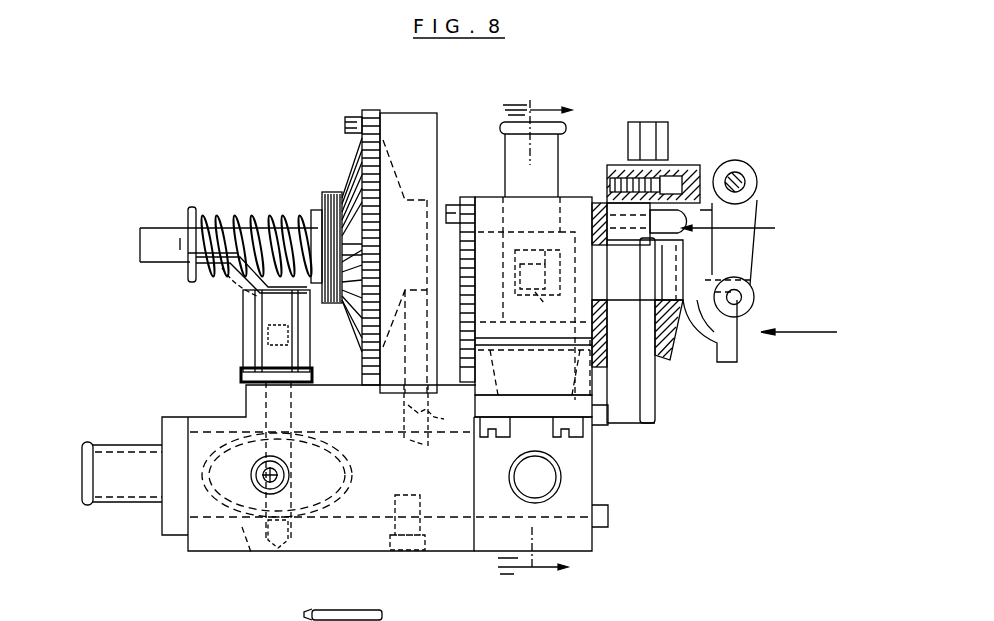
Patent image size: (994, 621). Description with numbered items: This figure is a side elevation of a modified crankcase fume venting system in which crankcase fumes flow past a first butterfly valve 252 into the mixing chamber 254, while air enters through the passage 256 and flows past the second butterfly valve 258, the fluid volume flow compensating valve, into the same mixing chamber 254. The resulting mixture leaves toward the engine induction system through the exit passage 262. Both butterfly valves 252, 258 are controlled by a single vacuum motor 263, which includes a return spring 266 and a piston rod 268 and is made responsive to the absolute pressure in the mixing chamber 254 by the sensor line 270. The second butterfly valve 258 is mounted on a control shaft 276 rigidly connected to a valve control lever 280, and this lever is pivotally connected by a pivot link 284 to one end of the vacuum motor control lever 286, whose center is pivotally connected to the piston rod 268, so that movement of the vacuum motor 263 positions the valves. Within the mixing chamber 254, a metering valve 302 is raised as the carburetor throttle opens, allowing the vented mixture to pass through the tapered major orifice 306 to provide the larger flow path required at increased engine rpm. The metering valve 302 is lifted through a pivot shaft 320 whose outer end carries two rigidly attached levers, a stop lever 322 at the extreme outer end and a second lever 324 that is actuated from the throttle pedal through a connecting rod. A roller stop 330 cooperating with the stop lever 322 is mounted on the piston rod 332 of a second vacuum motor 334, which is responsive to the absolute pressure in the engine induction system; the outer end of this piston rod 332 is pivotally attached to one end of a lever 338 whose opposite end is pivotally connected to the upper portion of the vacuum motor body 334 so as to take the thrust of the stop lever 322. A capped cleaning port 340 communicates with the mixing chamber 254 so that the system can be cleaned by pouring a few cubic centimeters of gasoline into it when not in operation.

The first butterfly valve 252 is at (182, 424).
The mixing chamber 254 is at (487, 502).
The passage 256 is at (133, 485).
The second butterfly valve 258 is at (247, 545).
The exit passage 262 is at (553, 186).
The vacuum motor 263 is at (336, 172).
The return spring 266 is at (223, 210).
The piston rod 268 is at (175, 230).
The sensor line 270 is at (408, 444).
The control shaft 276 is at (278, 355).
The valve control lever 280 is at (233, 288).
The pivot link 284 is at (175, 257).
The vacuum motor control lever 286 is at (152, 245).
The metering valve 302 is at (543, 313).
The tapered major orifice 306 is at (550, 386).
The pivot shaft 320 is at (532, 248).
The stop lever 322 is at (727, 355).
The second lever 324 is at (648, 125).
The roller stop 330 is at (757, 303).
The piston rod 332 is at (745, 290).
The vacuum motor 334 is at (673, 365).
The lever 338 is at (735, 244).
The cleaning port 340 is at (545, 465).